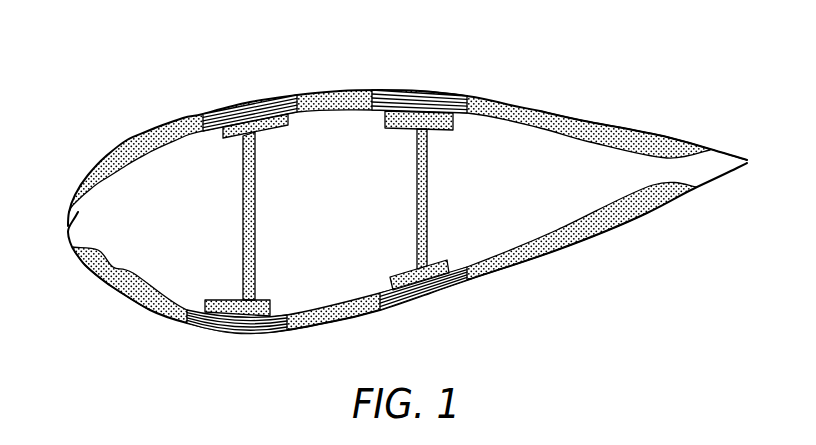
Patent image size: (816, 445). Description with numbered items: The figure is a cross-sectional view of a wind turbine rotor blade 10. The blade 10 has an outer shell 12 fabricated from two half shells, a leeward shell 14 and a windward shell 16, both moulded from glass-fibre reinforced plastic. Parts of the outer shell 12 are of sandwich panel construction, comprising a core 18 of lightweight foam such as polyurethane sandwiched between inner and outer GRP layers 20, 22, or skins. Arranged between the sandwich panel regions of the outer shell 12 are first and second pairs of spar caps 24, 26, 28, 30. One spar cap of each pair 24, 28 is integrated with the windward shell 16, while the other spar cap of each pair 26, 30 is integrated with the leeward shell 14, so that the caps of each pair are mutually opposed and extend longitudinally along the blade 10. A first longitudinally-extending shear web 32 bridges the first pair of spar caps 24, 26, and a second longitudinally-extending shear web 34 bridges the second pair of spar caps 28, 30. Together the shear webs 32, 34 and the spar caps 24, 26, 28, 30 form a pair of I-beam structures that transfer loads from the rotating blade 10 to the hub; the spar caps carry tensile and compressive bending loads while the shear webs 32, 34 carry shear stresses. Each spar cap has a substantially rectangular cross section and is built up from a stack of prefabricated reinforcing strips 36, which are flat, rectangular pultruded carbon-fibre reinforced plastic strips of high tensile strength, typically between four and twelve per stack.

The wind turbine rotor blade 10 is at (111, 112).
The outer shell 12 is at (595, 120).
The leeward shell 14 is at (670, 140).
The windward shell 16 is at (552, 251).
The core 18 is at (340, 316).
The inner GRP layer 20 is at (130, 285).
The outer GRP layer 22 is at (128, 305).
The spar cap 24 is at (240, 331).
The spar cap 26 is at (250, 108).
The spar cap 28 is at (428, 290).
The spar cap 30 is at (435, 94).
The first shear web 32 is at (256, 214).
The second shear web 34 is at (416, 190).
The reinforcing strips 36 is at (400, 100).